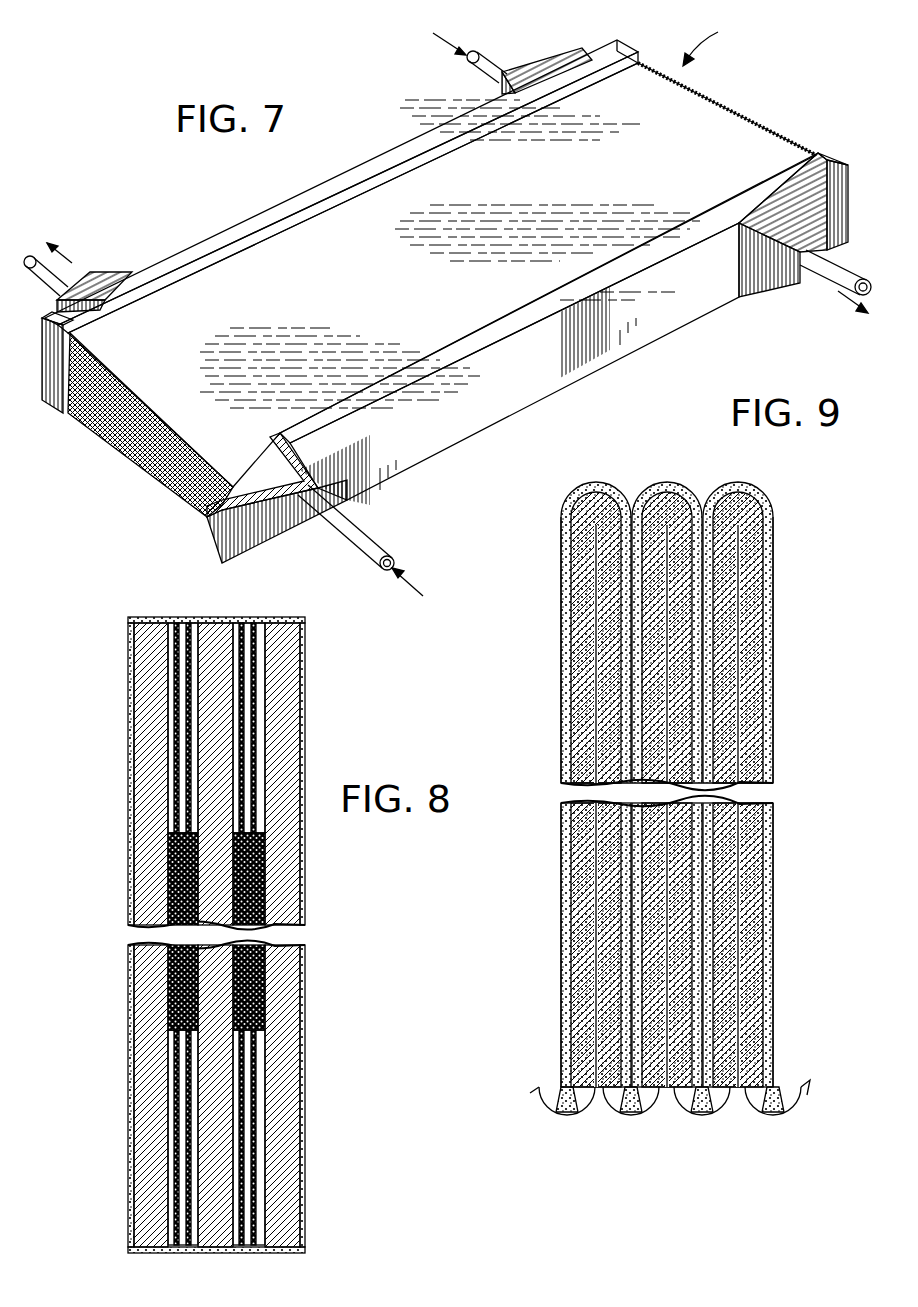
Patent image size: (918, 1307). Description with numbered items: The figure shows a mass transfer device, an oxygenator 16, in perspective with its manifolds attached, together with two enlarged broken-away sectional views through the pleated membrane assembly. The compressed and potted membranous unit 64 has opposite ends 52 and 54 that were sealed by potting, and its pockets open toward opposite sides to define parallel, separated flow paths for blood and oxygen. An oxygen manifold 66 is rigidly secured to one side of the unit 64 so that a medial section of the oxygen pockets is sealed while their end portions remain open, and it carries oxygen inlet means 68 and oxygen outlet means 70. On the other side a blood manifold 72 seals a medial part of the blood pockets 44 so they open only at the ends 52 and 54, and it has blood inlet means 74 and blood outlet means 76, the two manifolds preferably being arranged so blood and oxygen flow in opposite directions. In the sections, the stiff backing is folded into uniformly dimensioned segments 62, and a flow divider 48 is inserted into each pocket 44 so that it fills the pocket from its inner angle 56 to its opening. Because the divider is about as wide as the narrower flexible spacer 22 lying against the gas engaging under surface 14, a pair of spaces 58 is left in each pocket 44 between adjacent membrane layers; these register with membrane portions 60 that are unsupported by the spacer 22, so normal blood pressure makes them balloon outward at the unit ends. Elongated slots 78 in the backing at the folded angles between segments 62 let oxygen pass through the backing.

In FIG. 7, the oxygenator 16 is at (708, 44).
In FIG. 7, the opposite end 52 is at (733, 133).
In FIG. 7, the opposite end 54 is at (137, 468).
In FIG. 7, the membranous unit 64 is at (303, 364).
In FIG. 7, the oxygen manifold 66 is at (598, 353).
In FIG. 7, the oxygen inlet means 68 is at (367, 533).
In FIG. 7, the oxygen outlet means 70 is at (850, 266).
In FIG. 7, the blood manifold 72 is at (420, 148).
In FIG. 7, the blood inlet means 74 is at (528, 68).
In FIG. 7, the blood outlet means 76 is at (108, 276).
In FIG. 9, the gas engaging under surface 14 is at (600, 483).
In FIG. 8, the flexible spacer 22 is at (165, 848).
In FIG. 9, the flexible spacer 22 is at (667, 481).
In FIG. 9, the pocket 44 is at (555, 590).
In FIG. 8, the flow divider 48 is at (260, 858).
In FIG. 9, the flow divider 48 is at (567, 500).
In FIG. 9, the inner angle 56 is at (572, 1100).
In FIG. 8, the space 58 is at (248, 682).
In FIG. 8, the membrane portion 60 is at (185, 720).
In FIG. 8, the segment 62 is at (148, 617).
In FIG. 9, the segment 62 is at (570, 912).
In FIG. 9, the elongated slot 78 is at (557, 1100).